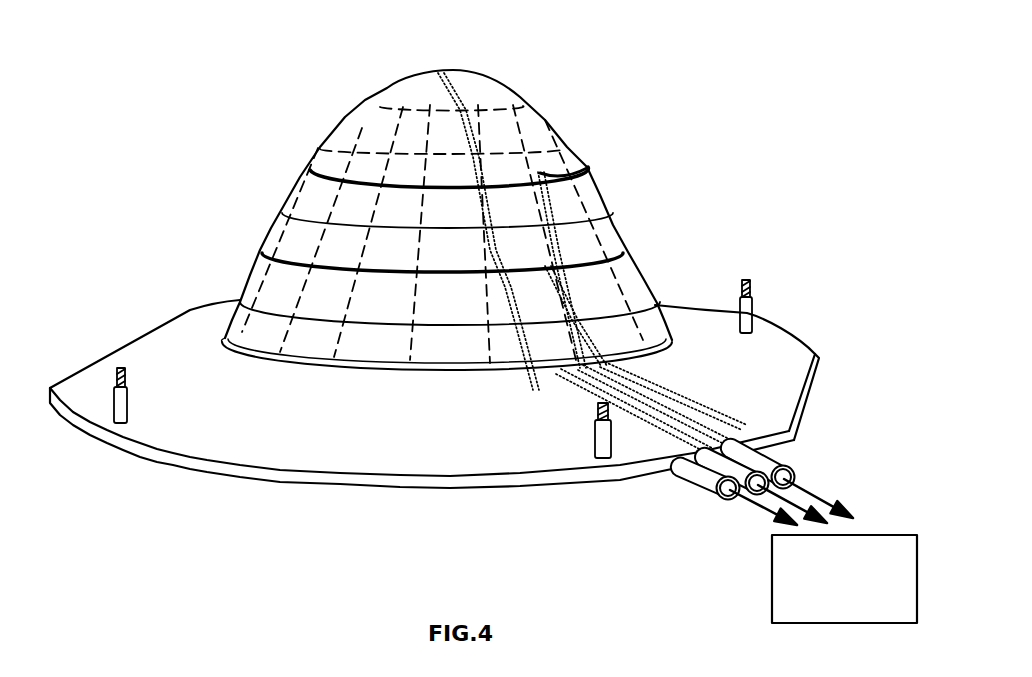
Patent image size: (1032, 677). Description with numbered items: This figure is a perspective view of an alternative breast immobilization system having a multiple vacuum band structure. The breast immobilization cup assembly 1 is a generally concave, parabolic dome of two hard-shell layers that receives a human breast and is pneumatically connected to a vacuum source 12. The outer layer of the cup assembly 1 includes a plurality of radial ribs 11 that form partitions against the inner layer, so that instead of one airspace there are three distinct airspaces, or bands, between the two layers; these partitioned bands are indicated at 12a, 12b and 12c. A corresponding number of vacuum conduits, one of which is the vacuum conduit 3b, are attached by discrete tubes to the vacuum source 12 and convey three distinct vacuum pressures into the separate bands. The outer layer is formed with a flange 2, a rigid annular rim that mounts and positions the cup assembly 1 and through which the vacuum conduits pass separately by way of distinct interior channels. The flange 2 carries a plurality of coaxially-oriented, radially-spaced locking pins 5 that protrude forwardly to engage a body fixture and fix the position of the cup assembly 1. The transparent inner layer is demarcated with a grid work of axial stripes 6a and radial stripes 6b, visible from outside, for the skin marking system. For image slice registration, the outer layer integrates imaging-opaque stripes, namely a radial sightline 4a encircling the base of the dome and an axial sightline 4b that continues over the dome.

The breast immobilization cup assembly 1 is at (297, 197).
The flange 2 is at (188, 339).
The vacuum conduit 3b is at (713, 475).
The radial sightline stripe 4a is at (307, 364).
The axial sightline stripe 4b is at (545, 323).
The locking pins 5 is at (597, 440).
The axial stripes 6a is at (335, 148).
The radial stripes 6b is at (353, 135).
The radial ribs 11 is at (433, 272).
The vacuum source 12 is at (866, 540).
The upper vacuum port 12a is at (590, 167).
The middle vacuum port 12b is at (543, 264).
The lower vacuum port 12c is at (560, 358).